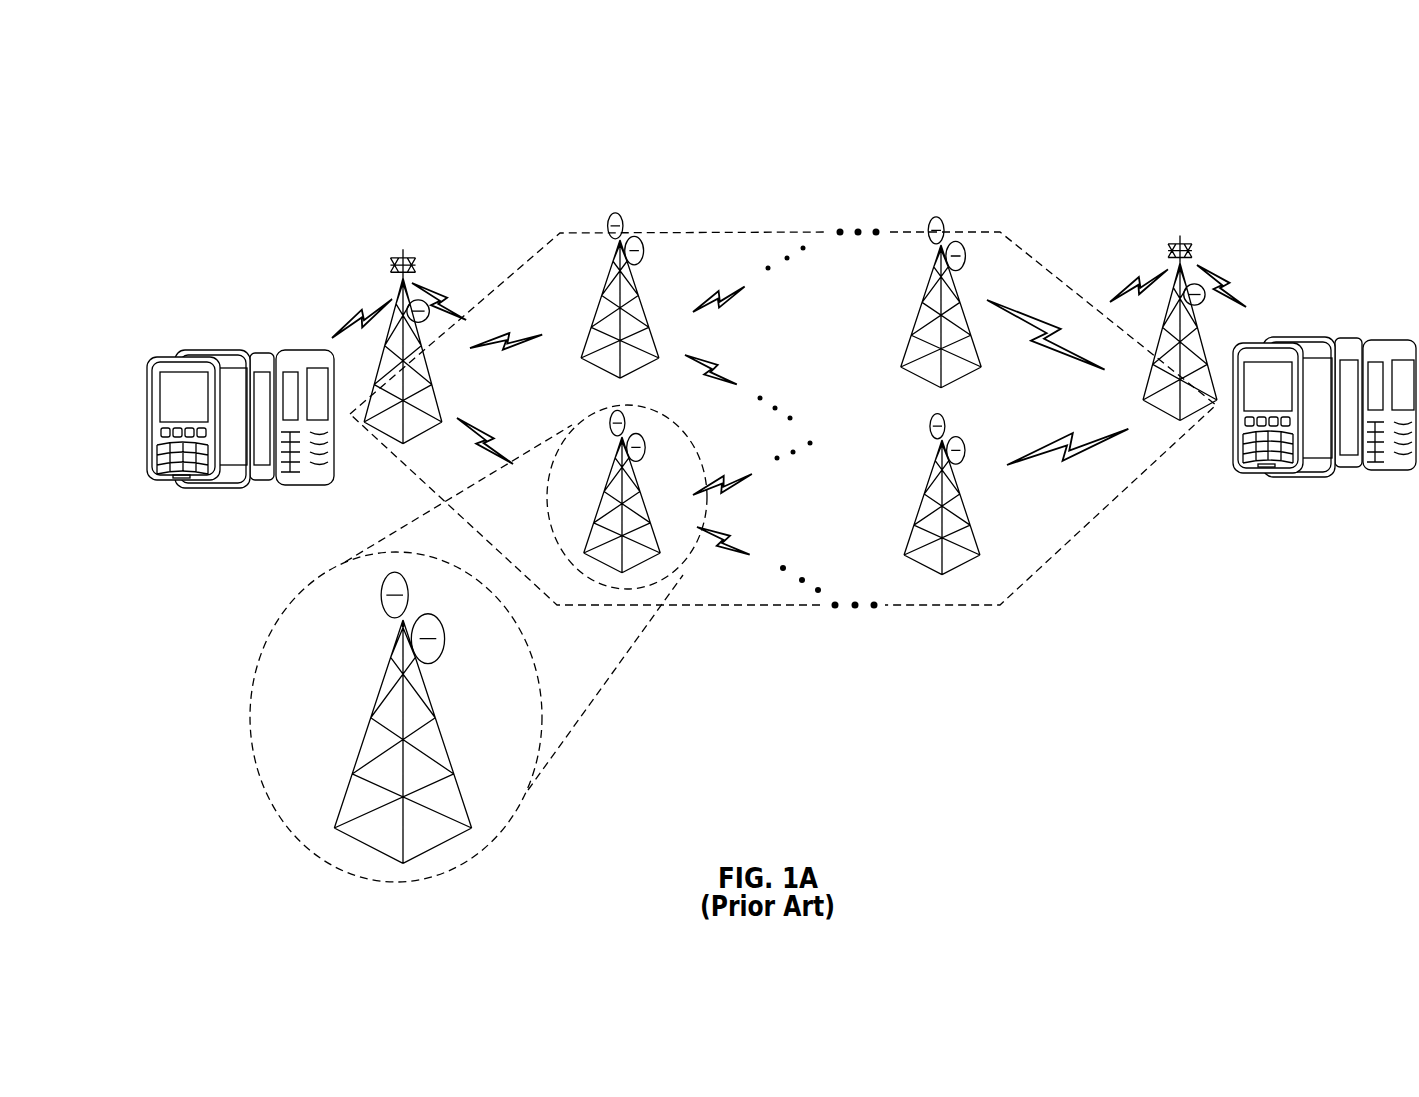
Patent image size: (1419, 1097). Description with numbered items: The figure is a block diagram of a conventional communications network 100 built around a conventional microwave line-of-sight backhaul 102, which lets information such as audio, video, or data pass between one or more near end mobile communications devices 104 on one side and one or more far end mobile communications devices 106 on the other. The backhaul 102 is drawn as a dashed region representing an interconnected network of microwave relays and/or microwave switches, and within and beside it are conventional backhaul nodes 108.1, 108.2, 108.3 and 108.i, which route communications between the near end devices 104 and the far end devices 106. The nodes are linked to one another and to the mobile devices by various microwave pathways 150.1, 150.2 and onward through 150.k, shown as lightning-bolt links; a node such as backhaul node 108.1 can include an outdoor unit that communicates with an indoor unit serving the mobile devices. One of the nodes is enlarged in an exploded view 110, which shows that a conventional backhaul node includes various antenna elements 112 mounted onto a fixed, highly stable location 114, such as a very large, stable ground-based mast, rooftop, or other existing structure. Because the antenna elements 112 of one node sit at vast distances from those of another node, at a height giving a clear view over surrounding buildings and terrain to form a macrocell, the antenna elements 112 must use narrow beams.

The conventional communications network 100 is at (227, 137).
The conventional microwave line-of-sight backhaul 102 is at (963, 232).
The near end mobile communications devices 104 is at (227, 328).
The far end mobile communications devices 106 is at (1320, 492).
The conventional backhaul node 108.1 is at (399, 250).
The conventional backhaul node 108.2 is at (617, 202).
The conventional backhaul node 108.3 is at (637, 425).
The conventional backhaul node 108.i is at (1181, 228).
The exploded view 110 is at (512, 822).
The antenna elements 112 is at (360, 600).
The fixed, highly stable location 114 is at (350, 743).
The microwave pathway 150.1 is at (522, 330).
The microwave pathway 150.2 is at (500, 437).
The microwave pathway 150.k is at (1085, 447).